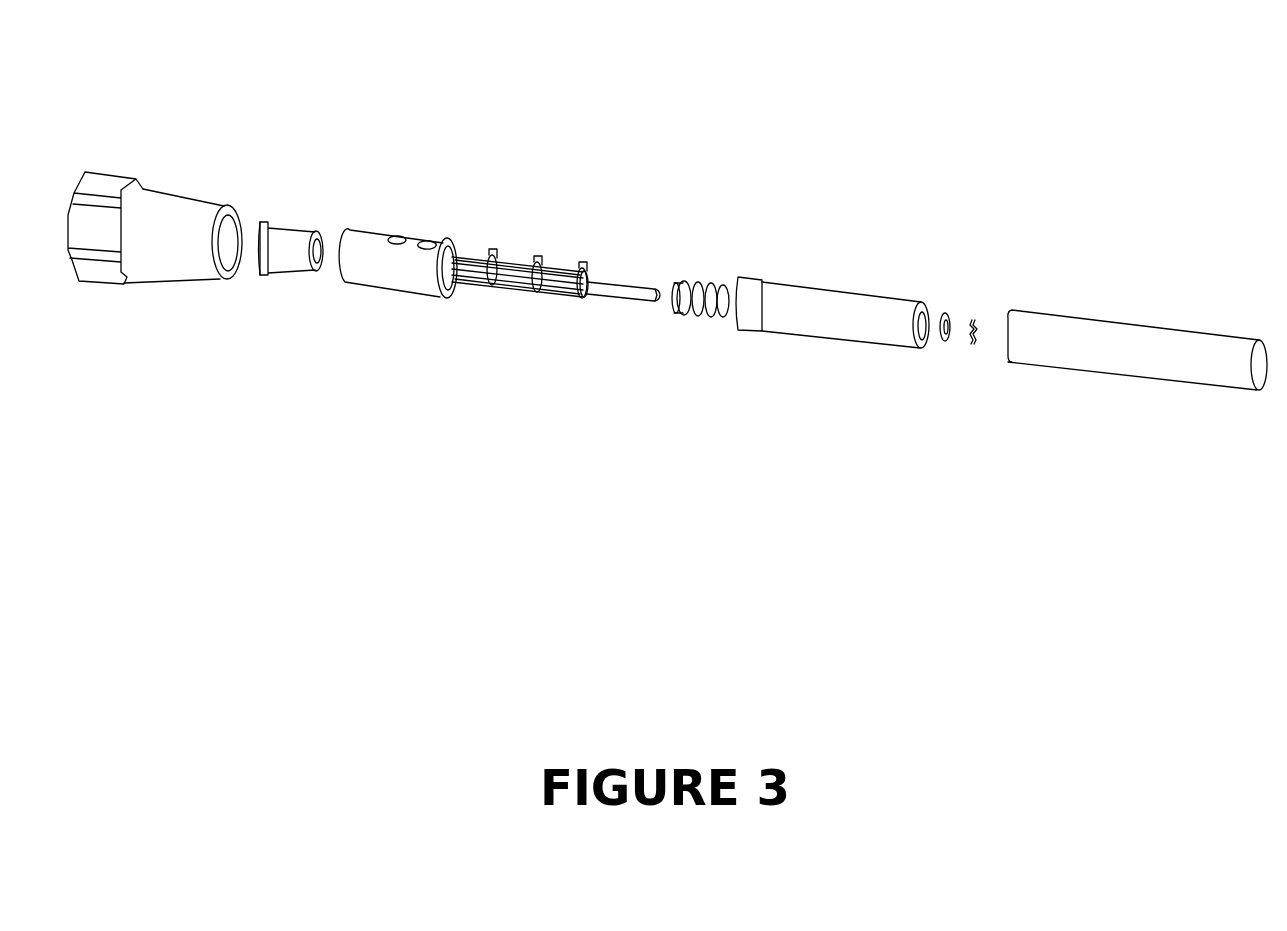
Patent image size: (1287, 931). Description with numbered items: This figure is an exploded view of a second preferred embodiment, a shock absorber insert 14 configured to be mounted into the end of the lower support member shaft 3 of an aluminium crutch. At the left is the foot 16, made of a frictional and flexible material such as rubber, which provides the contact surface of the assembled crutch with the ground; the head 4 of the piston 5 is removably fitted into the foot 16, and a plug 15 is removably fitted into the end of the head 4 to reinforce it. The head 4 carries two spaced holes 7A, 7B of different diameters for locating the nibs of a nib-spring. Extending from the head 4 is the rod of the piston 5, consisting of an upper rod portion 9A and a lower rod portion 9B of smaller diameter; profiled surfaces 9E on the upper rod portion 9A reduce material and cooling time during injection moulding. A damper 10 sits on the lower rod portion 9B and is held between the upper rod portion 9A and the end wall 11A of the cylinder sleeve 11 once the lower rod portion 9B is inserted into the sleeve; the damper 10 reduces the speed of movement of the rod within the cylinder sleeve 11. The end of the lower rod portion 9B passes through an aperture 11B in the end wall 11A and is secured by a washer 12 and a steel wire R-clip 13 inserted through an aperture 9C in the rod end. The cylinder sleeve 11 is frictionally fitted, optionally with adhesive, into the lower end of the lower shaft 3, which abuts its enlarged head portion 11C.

The lower support member shaft 3 is at (1073, 332).
The head 4 is at (416, 187).
The piston 5 is at (578, 287).
The lower spaced hole 7A is at (400, 236).
The higher spaced hole 7B is at (430, 240).
The upper rod portion 9A is at (517, 262).
The lower rod portion 9B is at (607, 282).
The aperture 9C is at (656, 283).
The profiled surfaces 9E is at (468, 281).
The damper 10 is at (693, 327).
The cylinder sleeve 11 is at (864, 309).
The end wall 11A is at (923, 305).
The aperture 11B is at (924, 327).
The enlarged head portion 11C is at (758, 280).
The washer 12 is at (946, 350).
The R-clip 13 is at (974, 357).
The shock absorber insert 14 is at (922, 95).
The plug 15 is at (288, 245).
The foot 16 is at (173, 220).